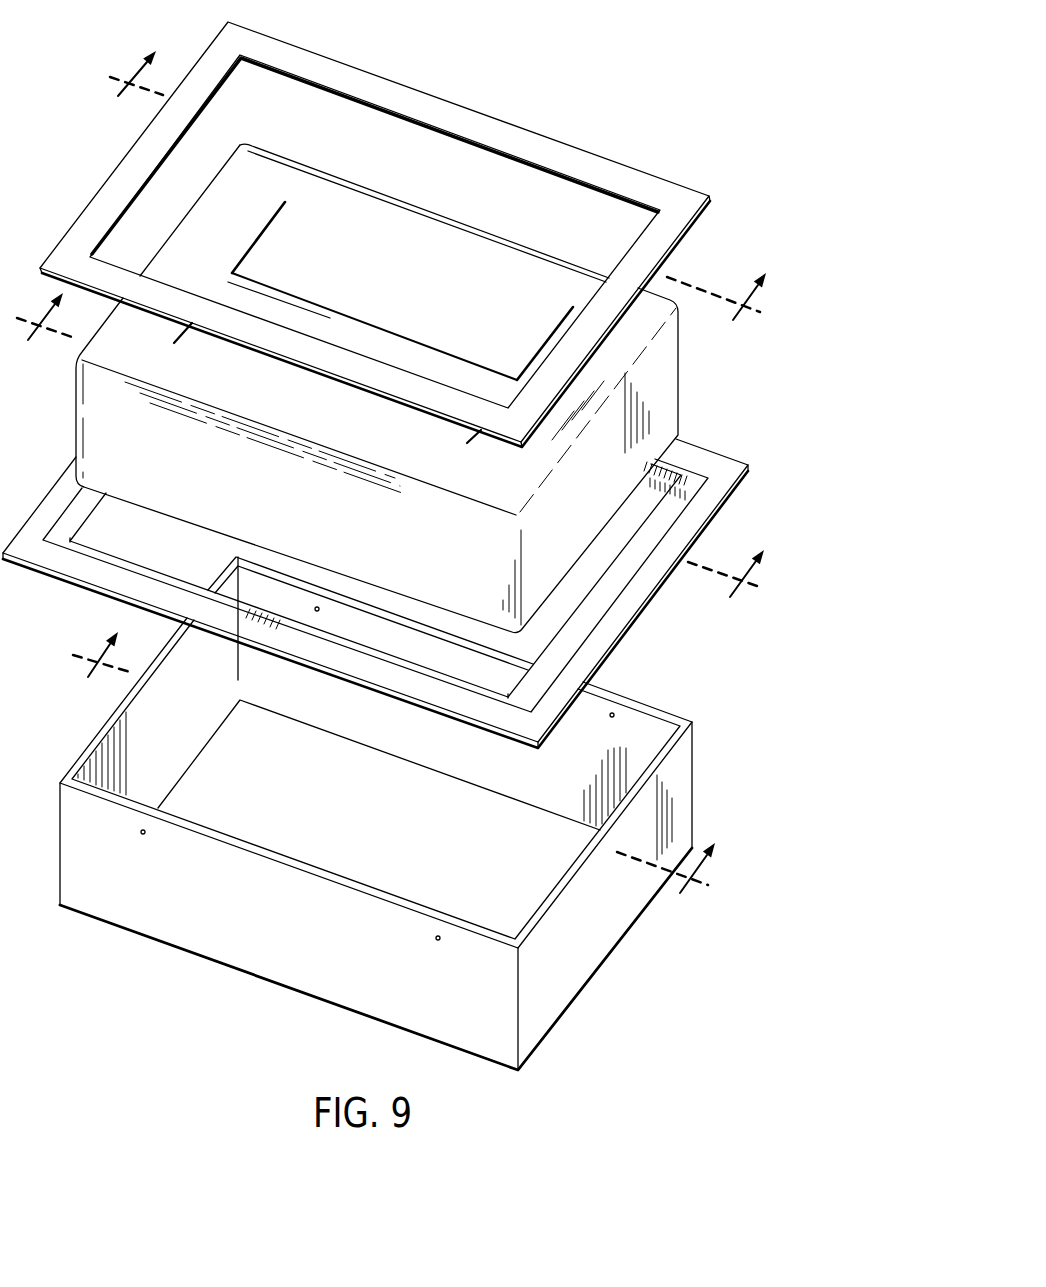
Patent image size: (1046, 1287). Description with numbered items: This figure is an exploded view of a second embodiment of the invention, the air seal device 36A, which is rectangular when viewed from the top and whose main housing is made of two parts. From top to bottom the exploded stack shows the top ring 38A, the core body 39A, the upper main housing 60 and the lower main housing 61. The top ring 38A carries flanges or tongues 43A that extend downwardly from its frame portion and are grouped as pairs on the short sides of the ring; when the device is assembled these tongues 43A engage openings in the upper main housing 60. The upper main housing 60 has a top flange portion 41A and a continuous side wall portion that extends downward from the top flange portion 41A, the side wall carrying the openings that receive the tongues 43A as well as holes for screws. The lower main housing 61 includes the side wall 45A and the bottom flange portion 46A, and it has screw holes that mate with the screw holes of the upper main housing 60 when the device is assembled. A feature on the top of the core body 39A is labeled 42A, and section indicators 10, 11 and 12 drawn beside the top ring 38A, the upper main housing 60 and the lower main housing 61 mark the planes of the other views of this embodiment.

The air seal device 36A is at (650, 66).
The top ring 38A is at (720, 169).
The core body 39A is at (714, 399).
The top flange portion 41A is at (712, 487).
The raised step on box top 42A is at (434, 345).
The flanges or tongues 43A is at (135, 204).
The side wall 45A is at (607, 917).
The bottom flange portion 46A is at (185, 762).
The upper main housing 60 is at (669, 614).
The lower main housing 61 is at (727, 762).
The section line 10 is at (452, 168).
The section line 11 is at (403, 436).
The section line 12 is at (411, 742).